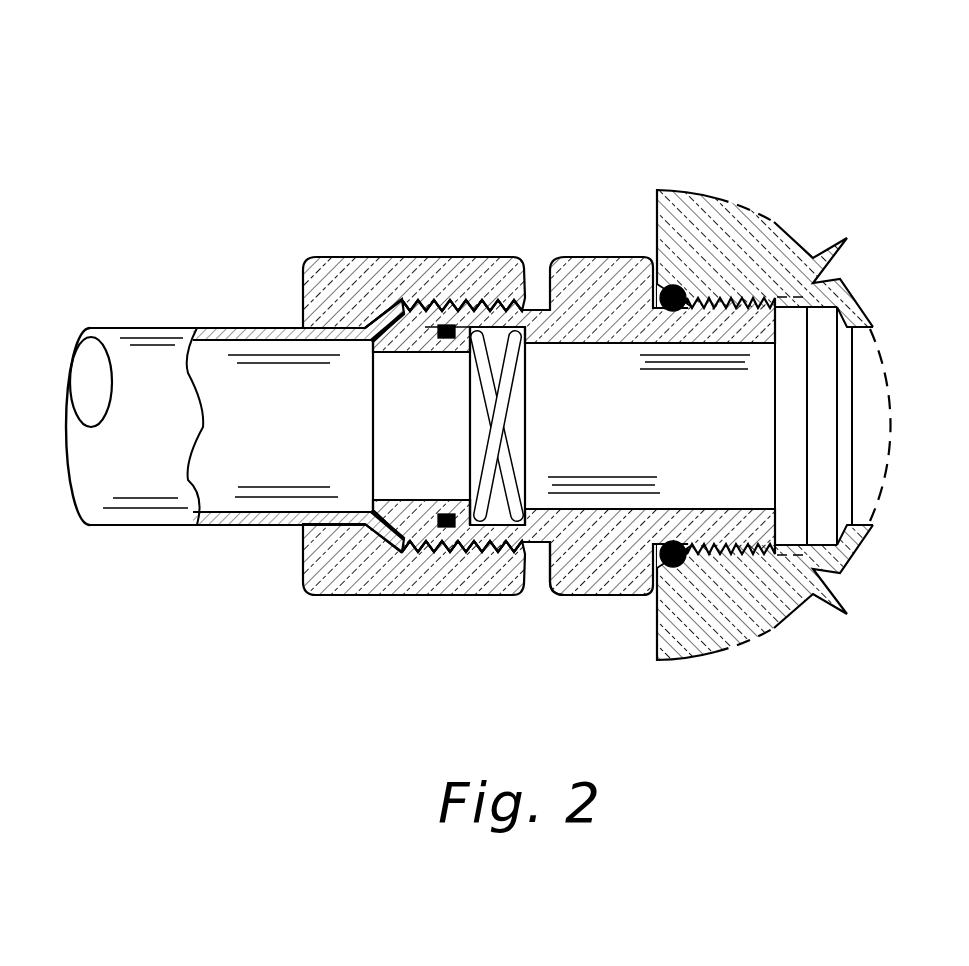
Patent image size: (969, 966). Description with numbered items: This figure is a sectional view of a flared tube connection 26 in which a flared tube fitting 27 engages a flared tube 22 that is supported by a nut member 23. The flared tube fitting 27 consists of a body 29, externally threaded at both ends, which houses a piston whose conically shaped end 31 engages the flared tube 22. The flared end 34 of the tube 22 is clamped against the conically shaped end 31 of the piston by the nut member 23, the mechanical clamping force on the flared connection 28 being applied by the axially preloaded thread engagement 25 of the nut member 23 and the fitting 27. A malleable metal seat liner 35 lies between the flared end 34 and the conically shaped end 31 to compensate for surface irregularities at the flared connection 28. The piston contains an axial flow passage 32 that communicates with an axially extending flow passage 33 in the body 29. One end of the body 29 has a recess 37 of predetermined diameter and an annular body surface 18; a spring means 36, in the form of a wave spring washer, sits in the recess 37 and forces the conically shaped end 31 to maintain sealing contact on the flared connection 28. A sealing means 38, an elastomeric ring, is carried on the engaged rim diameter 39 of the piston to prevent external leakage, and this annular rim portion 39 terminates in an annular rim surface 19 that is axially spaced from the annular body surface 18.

The annular body surface 18 is at (472, 408).
The annular rim surface 19 is at (520, 477).
The flared tube 22 is at (278, 327).
The nut member 23 is at (303, 273).
The axially preloaded thread engagement 25 is at (477, 545).
The flared tube connection 26 is at (422, 97).
The flared tube fitting 27 is at (608, 233).
The flared connection 28 is at (390, 543).
The body 29 is at (553, 598).
The conically shaped end 31 is at (405, 314).
The axial bore or flow passage 32 is at (407, 500).
The axially extending bore or flow passage 33 is at (690, 508).
The flared end 34 is at (371, 320).
The malleable metal seat liner 35 is at (396, 312).
The spring means 36 is at (513, 405).
The recess 37 is at (457, 528).
The sealing means 38 is at (443, 318).
The engaged rim diameter 39 is at (428, 316).